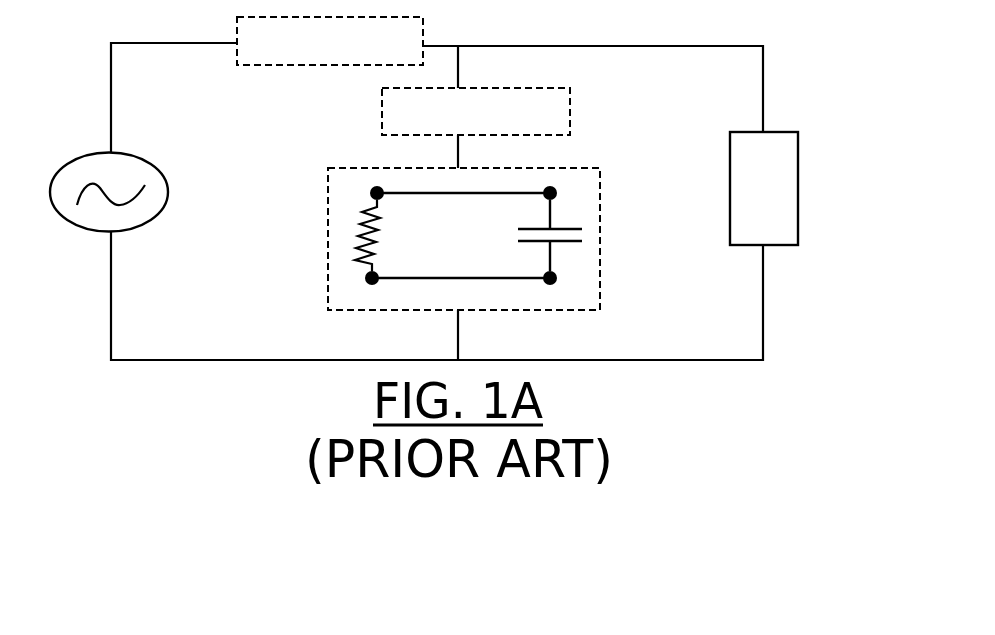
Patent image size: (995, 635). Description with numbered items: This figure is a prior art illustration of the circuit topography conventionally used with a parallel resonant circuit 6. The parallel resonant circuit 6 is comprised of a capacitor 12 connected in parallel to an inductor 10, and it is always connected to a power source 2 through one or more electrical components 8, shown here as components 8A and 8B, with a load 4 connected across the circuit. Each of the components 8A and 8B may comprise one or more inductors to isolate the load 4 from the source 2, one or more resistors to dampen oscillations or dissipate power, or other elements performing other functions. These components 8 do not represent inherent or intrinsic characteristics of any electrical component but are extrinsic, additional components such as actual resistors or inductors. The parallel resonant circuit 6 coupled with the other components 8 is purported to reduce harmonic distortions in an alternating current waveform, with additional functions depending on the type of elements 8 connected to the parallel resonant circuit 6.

The power source 2 is at (80, 228).
The load 4 is at (783, 232).
The parallel resonant circuit 6 is at (496, 220).
The electrical components 8 is at (391, 122).
The component 8A is at (330, 41).
The component 8B is at (476, 111).
The inductor 10 is at (375, 237).
The capacitor 12 is at (567, 232).